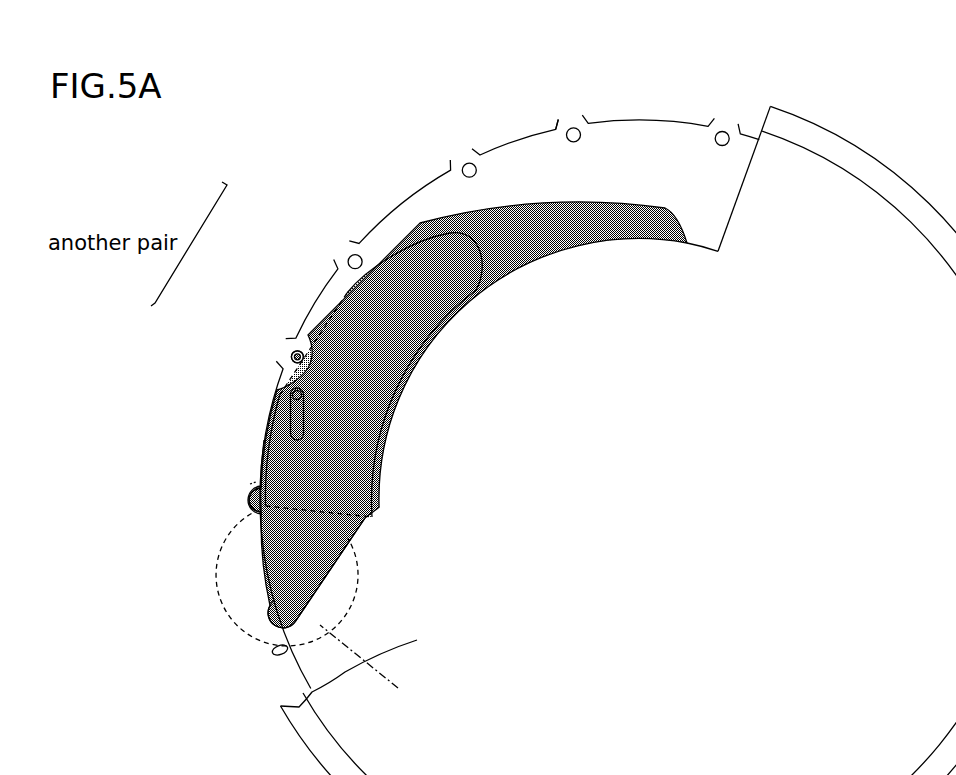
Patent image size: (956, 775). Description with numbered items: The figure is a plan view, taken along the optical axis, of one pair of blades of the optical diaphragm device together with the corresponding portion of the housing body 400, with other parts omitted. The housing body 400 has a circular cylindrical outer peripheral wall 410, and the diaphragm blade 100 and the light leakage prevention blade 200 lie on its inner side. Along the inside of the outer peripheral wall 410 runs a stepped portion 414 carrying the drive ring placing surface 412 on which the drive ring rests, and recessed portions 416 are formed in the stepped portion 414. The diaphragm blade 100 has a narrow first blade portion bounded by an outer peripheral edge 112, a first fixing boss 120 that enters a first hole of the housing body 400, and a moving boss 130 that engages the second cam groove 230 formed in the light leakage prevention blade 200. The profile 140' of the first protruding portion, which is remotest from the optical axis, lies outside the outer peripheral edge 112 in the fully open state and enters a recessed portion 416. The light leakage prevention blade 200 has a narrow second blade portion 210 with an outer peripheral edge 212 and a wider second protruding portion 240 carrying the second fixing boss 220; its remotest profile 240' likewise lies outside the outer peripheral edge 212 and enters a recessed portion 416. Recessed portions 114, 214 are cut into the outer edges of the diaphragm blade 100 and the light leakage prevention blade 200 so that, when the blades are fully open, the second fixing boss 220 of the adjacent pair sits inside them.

The housing body 400 is at (725, 194).
The drive ring placing surface 412 is at (513, 135).
The stepped portion 414 is at (539, 143).
The outer peripheral wall 410 is at (324, 711).
The diaphragm blade 100 is at (567, 244).
The light leakage prevention blade 200 is at (430, 318).
The outer peripheral edge of the second blade portion 212 is at (266, 565).
The outer peripheral edge of the first blade portion 112 is at (268, 457).
The second blade portion 210 is at (362, 546).
The second protruding portion 240 is at (323, 667).
The profile of the second protruding portion 240' is at (211, 621).
The second fixing boss 220 is at (374, 667).
The profile of the first protruding portion 140' is at (198, 511).
The recessed portion 416 is at (248, 502).
The first fixing boss 120 is at (248, 483).
The moving boss 130 is at (296, 404).
The second cam groove 230 is at (296, 424).
The recessed portion 114 is at (291, 360).
The recessed portion 214 is at (291, 360).